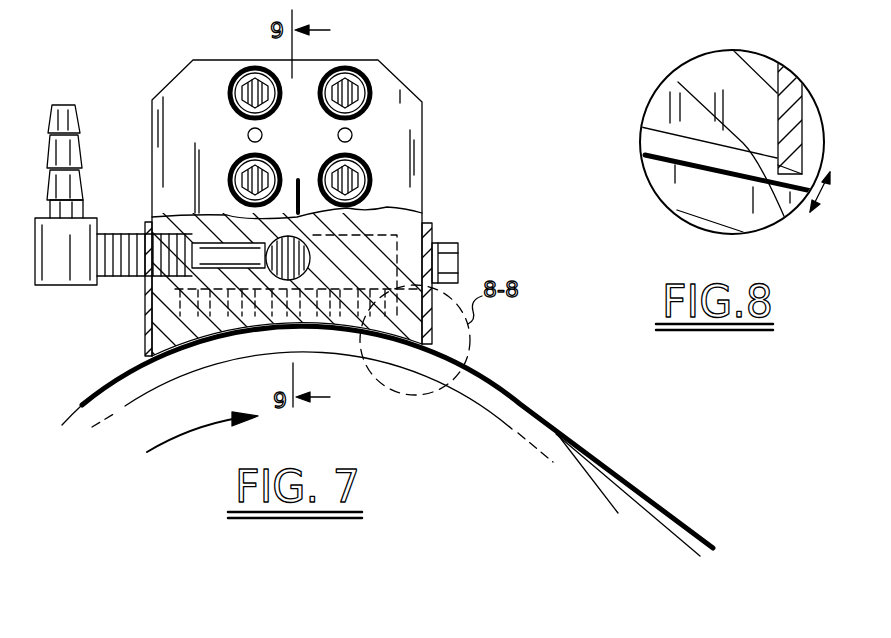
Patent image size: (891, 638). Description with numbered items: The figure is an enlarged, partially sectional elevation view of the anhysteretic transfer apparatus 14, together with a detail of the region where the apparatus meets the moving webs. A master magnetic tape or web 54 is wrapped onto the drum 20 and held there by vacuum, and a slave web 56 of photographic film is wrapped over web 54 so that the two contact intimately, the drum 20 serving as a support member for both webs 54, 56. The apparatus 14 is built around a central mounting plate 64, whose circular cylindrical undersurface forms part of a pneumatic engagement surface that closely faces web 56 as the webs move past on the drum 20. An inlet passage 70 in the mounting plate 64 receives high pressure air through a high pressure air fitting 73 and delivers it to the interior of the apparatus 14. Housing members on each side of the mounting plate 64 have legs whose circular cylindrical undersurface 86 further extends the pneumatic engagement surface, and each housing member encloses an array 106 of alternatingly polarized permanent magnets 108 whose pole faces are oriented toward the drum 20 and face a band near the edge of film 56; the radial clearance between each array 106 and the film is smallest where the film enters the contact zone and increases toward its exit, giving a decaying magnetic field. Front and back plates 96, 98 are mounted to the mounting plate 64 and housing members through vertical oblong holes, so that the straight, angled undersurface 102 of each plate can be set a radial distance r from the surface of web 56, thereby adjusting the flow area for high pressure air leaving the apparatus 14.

In FIG. 7, the apparatus 14 is at (475, 228).
In FIG. 7, the drum 20 is at (603, 492).
In FIG. 8, the drum 20 is at (697, 182).
In FIG. 7, the magnetic tape or web 54 is at (673, 533).
In FIG. 7, the web of photographic film 56 is at (672, 520).
In FIG. 8, the web of photographic film 56 is at (648, 150).
In FIG. 7, the central mounting plate 64 is at (418, 133).
In FIG. 8, the central mounting plate 64 is at (710, 75).
In FIG. 7, the inlet passage 70 is at (220, 248).
In FIG. 7, the high pressure air fitting 73 is at (83, 152).
In FIG. 7, the circular cylindrical undersurface 86 is at (163, 360).
In FIG. 7, the front plate 96 is at (433, 326).
In FIG. 8, the front plate 96 is at (795, 103).
In FIG. 7, the back plate 98 is at (148, 318).
In FIG. 8, the straight, angled undersurface 102 is at (805, 155).
In FIG. 7, the array of permanent magnets 106 is at (213, 347).
In FIG. 8, the array of permanent magnets 106 is at (812, 208).
In FIG. 8, the permanent magnet 108 is at (841, 247).